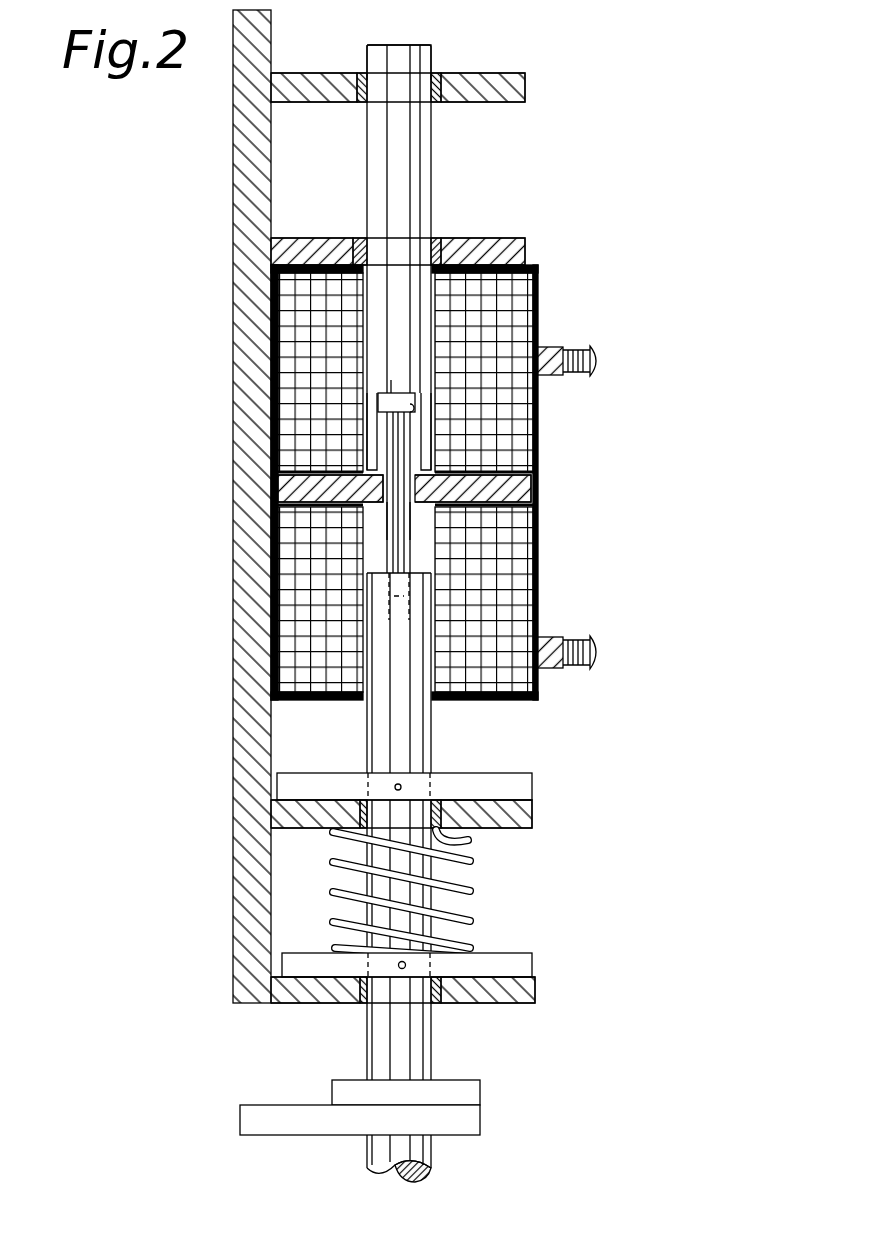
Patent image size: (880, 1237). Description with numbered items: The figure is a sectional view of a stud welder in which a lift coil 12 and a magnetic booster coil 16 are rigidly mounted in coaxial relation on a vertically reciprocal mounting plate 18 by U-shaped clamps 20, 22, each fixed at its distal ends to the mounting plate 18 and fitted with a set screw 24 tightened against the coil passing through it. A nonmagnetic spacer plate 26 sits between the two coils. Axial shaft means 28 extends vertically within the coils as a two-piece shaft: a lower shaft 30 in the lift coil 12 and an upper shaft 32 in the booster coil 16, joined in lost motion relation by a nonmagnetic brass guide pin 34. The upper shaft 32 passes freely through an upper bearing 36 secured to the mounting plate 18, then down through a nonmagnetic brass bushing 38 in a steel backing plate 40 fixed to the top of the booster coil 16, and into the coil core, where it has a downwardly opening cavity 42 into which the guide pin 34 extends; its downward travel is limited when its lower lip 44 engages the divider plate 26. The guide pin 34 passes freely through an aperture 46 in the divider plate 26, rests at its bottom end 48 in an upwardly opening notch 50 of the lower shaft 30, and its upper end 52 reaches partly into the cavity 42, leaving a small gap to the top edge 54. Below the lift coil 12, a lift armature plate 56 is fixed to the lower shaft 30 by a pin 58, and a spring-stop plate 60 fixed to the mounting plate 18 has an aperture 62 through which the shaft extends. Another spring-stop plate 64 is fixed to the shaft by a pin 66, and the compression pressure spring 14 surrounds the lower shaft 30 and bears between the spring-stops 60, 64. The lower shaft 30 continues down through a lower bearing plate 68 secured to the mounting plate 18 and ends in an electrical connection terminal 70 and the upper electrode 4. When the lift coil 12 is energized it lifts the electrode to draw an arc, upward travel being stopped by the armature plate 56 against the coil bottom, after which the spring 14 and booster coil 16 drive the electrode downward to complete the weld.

The upper electrode 4 is at (382, 1155).
The lift coil 12 is at (284, 593).
The pressure spring 14 is at (465, 890).
The magnetic booster coil 16 is at (287, 333).
The mounting plate 18 is at (246, 197).
The U-shaped clamp 20 is at (548, 636).
The U-shaped clamp 22 is at (545, 347).
The set screw 24 is at (600, 352).
The nonmagnetic spacer plate 26 is at (520, 486).
The axial shaft means 28 is at (430, 40).
The lower shaft 30 is at (382, 725).
The upper shaft 32 is at (380, 157).
The nonmagnetic guide pin 34 is at (393, 532).
The upper bearing 36 is at (518, 88).
The nonmagnetic brass bushing 38 is at (437, 240).
The steel backing plate 40 is at (508, 242).
The downwardly opening cavity 42 is at (413, 404).
The lower lip 44 is at (426, 462).
The aperture 46 is at (413, 510).
The bottom end 48 is at (405, 614).
The upwardly opening notch 50 is at (383, 571).
The upper end 52 is at (393, 400).
The top edge 54 is at (392, 392).
The lift armature plate 56 is at (505, 780).
The pin 58 is at (403, 786).
The spring-stop plate 60 is at (522, 818).
The aperture 62 is at (440, 832).
The spring-stop plate 64 is at (510, 958).
The pin 66 is at (404, 969).
The lower bearing plate 68 is at (512, 996).
The electrical connection terminal 70 is at (283, 1112).